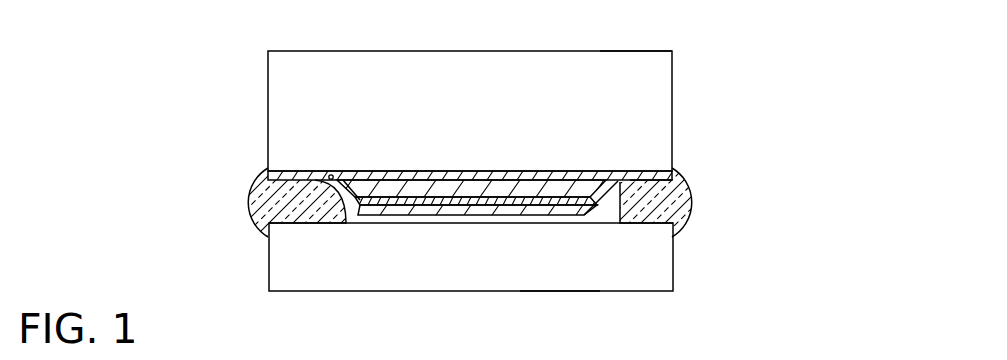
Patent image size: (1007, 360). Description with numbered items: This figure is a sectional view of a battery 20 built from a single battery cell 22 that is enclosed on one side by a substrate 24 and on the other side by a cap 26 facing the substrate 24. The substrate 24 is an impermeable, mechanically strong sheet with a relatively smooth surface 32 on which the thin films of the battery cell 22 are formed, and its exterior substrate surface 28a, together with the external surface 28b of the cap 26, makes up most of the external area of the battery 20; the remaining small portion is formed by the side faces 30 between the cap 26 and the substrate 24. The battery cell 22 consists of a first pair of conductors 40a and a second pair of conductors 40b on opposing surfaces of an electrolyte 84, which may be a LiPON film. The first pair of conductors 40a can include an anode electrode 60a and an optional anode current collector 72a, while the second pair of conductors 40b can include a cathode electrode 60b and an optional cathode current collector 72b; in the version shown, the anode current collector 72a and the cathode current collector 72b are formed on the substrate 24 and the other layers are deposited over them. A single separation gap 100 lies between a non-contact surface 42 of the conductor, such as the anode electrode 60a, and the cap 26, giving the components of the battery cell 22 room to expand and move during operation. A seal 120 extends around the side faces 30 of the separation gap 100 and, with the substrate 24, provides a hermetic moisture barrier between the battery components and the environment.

The battery 20 is at (176, 74).
The battery cell 22 is at (606, 217).
The substrate 24 is at (456, 96).
The cap 26 is at (343, 268).
The exterior substrate surface 28a is at (641, 51).
The external surface of the cap 28b is at (562, 292).
The side faces 30 is at (244, 184).
The smooth surface 32 is at (331, 175).
The first pair of conductors 40a is at (636, 178).
The second pair of conductors 40b is at (582, 194).
The non-contact surface 42 is at (495, 222).
The anode electrode 60a is at (552, 211).
The cathode electrode 60b is at (542, 190).
The anode current collector 72a is at (667, 178).
The cathode current collector 72b is at (485, 176).
The electrolyte 84 is at (432, 204).
The separation gap 100 is at (432, 221).
The seal 120 is at (693, 178).